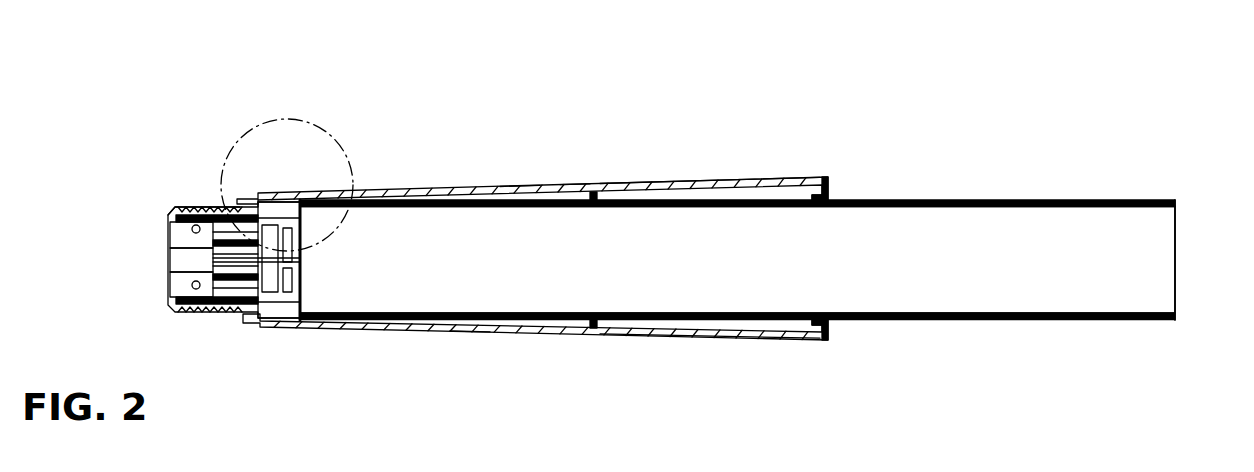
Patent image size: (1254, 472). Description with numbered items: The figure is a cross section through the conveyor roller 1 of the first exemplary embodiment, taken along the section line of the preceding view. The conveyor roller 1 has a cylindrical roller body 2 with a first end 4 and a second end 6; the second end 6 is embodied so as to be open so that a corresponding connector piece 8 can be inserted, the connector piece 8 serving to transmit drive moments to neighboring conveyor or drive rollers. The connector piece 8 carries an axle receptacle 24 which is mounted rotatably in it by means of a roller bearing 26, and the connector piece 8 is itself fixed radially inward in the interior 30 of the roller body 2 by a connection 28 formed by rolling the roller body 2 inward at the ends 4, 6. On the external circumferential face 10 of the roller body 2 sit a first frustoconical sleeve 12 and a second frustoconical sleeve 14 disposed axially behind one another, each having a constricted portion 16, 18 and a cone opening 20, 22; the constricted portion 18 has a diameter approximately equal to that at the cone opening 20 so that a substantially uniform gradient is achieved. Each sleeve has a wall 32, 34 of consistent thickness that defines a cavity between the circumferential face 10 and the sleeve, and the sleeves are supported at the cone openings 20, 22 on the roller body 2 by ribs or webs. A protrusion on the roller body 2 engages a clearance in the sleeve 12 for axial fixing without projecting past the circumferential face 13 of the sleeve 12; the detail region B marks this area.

The conveyor roller 1 is at (1046, 146).
The roller body 2 is at (990, 320).
The first end 4 is at (263, 334).
The second end 6 is at (1174, 180).
The connector piece 8 is at (191, 200).
The circumferential face 10 is at (1010, 198).
The first frustoconical sleeve 12 is at (462, 192).
The circumferential face of the sleeve 13 is at (517, 186).
The second frustoconical sleeve 14 is at (720, 181).
The constricted portion 16 is at (343, 328).
The constricted portion 18 is at (660, 333).
The cone opening 20 is at (567, 192).
The cone opening 22 is at (808, 178).
The axle receptacle 24 is at (178, 274).
The roller bearing 26 is at (203, 313).
The connection 28 is at (280, 320).
The interior 30 is at (515, 277).
The wall 32 is at (468, 330).
The wall 34 is at (788, 340).
The detail region B is at (305, 122).